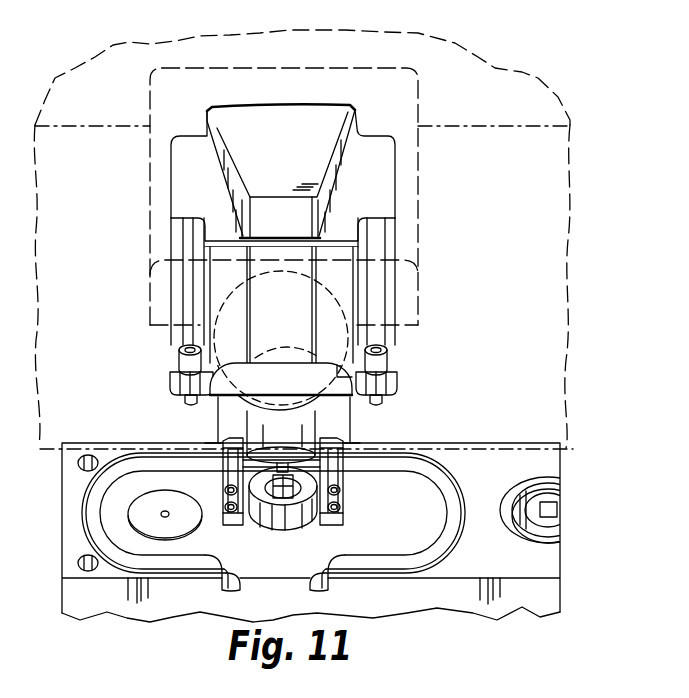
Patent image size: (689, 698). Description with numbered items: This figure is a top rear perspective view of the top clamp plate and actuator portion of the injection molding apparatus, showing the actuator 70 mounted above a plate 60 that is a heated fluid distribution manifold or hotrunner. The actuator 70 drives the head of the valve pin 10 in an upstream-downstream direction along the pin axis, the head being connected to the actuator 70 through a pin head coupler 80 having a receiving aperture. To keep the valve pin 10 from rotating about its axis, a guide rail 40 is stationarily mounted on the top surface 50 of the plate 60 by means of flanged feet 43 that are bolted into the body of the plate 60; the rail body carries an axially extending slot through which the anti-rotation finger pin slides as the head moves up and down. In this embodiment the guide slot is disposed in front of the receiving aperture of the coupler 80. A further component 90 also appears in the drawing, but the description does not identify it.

The valve pin 10 is at (312, 458).
The guide rail 40 is at (345, 438).
The flanged feet 43 is at (345, 522).
The top surface 50 is at (499, 485).
The plate 60 is at (498, 443).
The actuator 70 is at (172, 372).
The pin head coupler 80 is at (236, 424).
The mounting bracket 90 is at (345, 513).